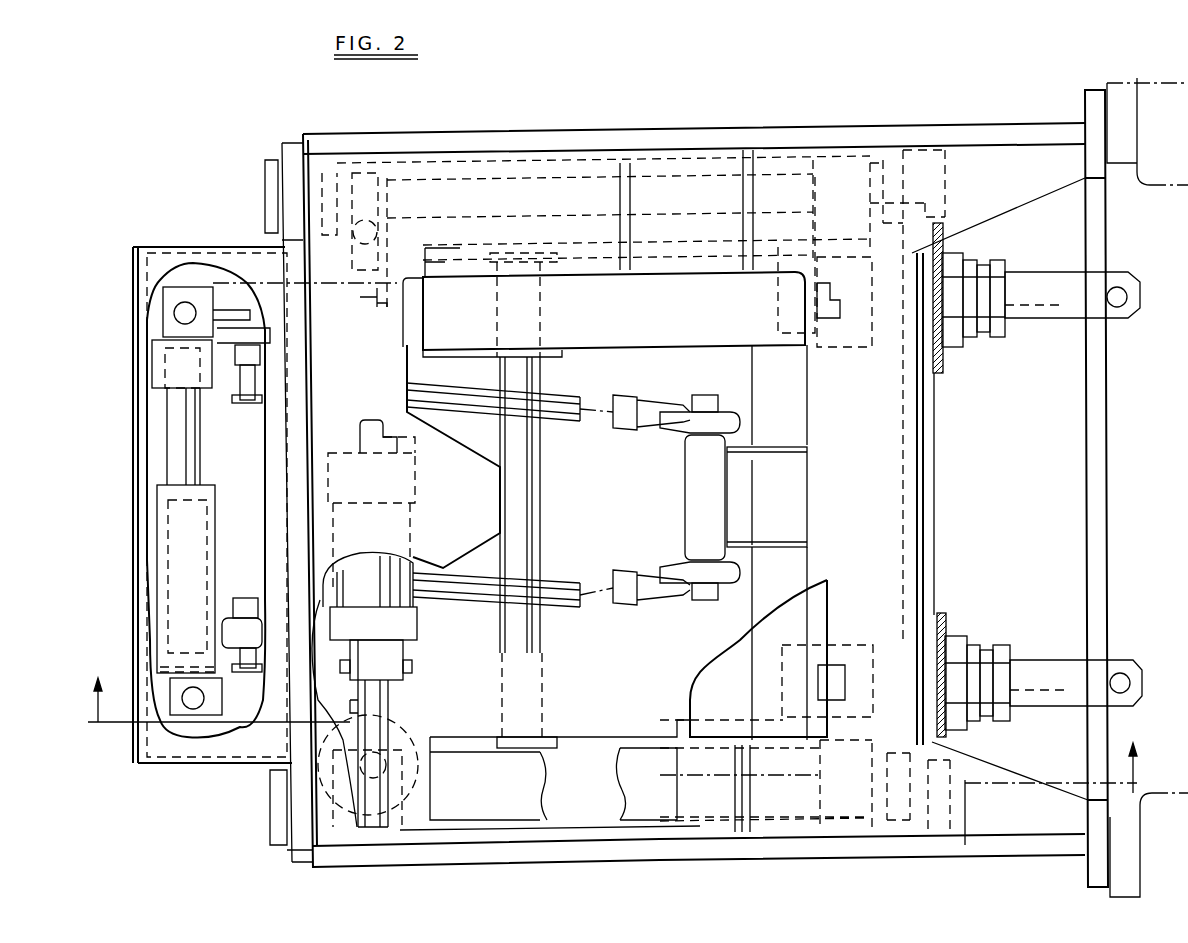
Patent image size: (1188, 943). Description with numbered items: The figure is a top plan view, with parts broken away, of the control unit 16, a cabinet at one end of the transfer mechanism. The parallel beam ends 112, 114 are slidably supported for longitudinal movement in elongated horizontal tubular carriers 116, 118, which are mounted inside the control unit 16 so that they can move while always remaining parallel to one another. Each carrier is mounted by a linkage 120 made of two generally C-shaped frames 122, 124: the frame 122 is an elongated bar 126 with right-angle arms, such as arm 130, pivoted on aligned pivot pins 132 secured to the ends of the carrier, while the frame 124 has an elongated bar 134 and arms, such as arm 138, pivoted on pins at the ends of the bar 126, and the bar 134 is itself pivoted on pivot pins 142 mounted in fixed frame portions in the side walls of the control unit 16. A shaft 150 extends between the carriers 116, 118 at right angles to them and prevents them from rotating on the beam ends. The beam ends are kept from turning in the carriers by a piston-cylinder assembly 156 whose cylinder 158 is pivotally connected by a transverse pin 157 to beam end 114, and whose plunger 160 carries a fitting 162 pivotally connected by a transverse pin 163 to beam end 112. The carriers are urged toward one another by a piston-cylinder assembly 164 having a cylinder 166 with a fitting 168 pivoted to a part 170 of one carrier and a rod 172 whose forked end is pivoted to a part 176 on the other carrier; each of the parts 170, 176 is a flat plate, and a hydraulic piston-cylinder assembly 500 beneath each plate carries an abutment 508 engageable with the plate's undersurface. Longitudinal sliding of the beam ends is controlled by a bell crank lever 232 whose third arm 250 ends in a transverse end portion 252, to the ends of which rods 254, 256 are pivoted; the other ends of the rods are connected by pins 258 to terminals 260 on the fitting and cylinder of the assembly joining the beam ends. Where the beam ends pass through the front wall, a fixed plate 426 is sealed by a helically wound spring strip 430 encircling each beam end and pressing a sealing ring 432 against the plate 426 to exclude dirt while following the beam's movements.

The control unit 16 is at (456, 134).
The beam end 112 is at (1062, 322).
The beam end 114 is at (1037, 662).
The tubular carrier 116 is at (740, 347).
The tubular carrier 118 is at (688, 650).
The linkage 120 is at (565, 180).
The C-shaped frame 122 is at (657, 182).
The C-shaped frame 124 is at (800, 172).
The elongated bar 126 is at (470, 820).
The arm 130 is at (813, 622).
The pivot pin 132 is at (360, 298).
The elongated bar 134 is at (531, 833).
The arm 138 is at (860, 812).
The pivot pin 142 is at (332, 139).
The shaft 150 is at (540, 475).
The piston-cylinder assembly 156 is at (155, 533).
The transverse pin 157 is at (183, 693).
The cylinder 158 is at (170, 589).
The plunger 160 is at (167, 426).
The fitting 162 is at (152, 366).
The transverse pin 163 is at (168, 317).
The piston-cylinder assembly 164 is at (414, 580).
The cylinder 166 is at (412, 560).
The fitting 168 is at (415, 640).
The part of carrier 170 is at (378, 828).
The rod 172 is at (412, 438).
The part of carrier 176 is at (392, 136).
The bell crank lever 232 is at (810, 473).
The third arm 250 is at (800, 513).
The transverse end portion 252 is at (683, 489).
The rod 254 is at (566, 398).
The rod 256 is at (572, 598).
The pin 258 is at (241, 402).
The terminal 260 is at (236, 668).
The plate 426 is at (933, 456).
The spring strip 430 is at (980, 265).
The sealing ring 432 is at (945, 357).
The hydraulic piston-cylinder assembly 500 is at (334, 801).
The abutment 508 is at (393, 237).